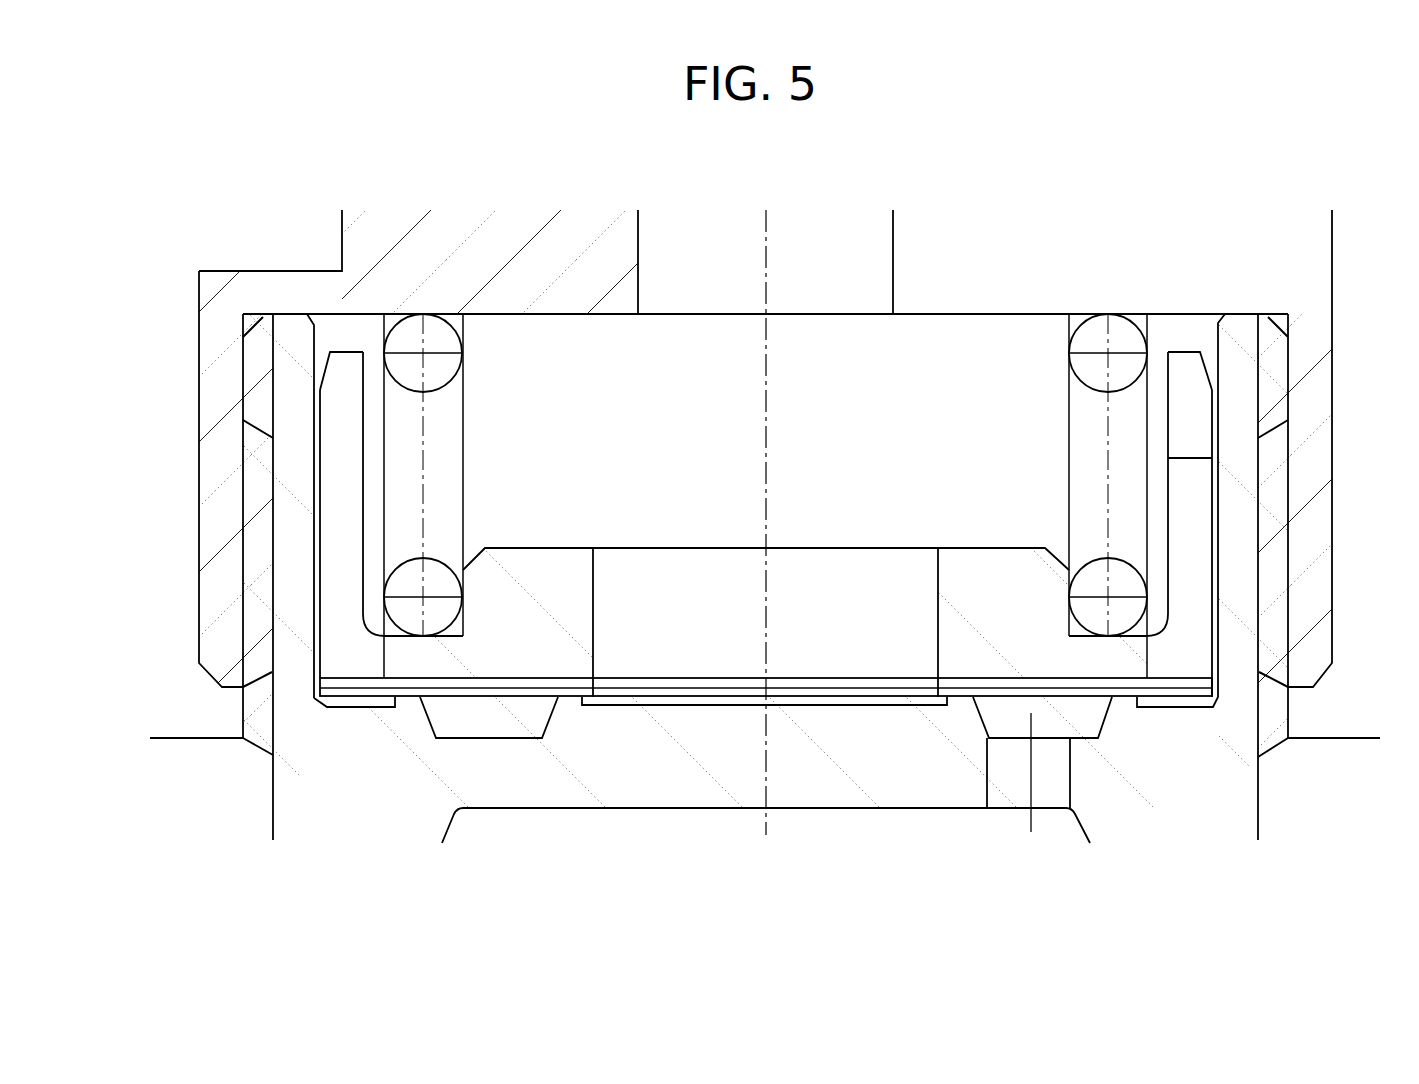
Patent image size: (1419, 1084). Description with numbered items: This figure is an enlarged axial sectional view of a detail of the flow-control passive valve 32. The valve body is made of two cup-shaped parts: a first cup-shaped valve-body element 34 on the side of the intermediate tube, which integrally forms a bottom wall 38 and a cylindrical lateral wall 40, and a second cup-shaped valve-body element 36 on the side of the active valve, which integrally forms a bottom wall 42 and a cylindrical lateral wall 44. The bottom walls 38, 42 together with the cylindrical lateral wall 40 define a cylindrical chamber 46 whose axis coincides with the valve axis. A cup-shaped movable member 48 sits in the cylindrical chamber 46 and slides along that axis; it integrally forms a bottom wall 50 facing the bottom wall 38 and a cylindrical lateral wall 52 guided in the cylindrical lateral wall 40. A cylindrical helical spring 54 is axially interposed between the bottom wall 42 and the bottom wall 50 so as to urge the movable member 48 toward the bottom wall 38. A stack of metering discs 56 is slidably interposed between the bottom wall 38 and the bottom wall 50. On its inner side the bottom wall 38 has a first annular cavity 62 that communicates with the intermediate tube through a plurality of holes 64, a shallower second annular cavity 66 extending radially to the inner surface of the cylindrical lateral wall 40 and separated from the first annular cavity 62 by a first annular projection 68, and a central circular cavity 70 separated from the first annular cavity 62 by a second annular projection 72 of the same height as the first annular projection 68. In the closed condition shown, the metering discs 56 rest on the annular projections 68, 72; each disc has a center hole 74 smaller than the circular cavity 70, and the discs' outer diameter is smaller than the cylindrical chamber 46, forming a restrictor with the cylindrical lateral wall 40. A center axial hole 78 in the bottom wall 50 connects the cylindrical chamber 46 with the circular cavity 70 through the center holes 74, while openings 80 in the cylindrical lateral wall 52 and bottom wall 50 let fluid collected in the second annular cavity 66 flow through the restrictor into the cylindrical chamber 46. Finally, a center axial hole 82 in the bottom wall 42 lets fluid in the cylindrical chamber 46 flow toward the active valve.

The passive valve 32 is at (170, 262).
The first cup-shaped valve-body element 34 is at (1232, 790).
The second cup-shaped valve-body element 36 is at (1332, 272).
The bottom wall 38 is at (888, 785).
The cylindrical lateral wall 40 is at (1242, 520).
The bottom wall 42 is at (592, 298).
The cylindrical lateral wall 44 is at (216, 477).
The cylindrical chamber 46 is at (970, 353).
The cup-shaped movable member 48 is at (330, 617).
The bottom wall 50 is at (538, 668).
The cylindrical lateral wall 52 is at (1200, 413).
The cylindrical helical spring 54 is at (447, 370).
The metering discs 56 is at (472, 678).
The first annular cavity 62 is at (983, 723).
The holes 64 is at (997, 793).
The second annular cavity 66 is at (1207, 643).
The first annular projection 68 is at (410, 707).
The circular cavity 70 is at (667, 705).
The second annular projection 72 is at (570, 708).
The center hole 74 is at (595, 673).
The center axial hole 78 is at (937, 583).
The openings 80 is at (1192, 570).
The center axial hole 82 is at (638, 272).